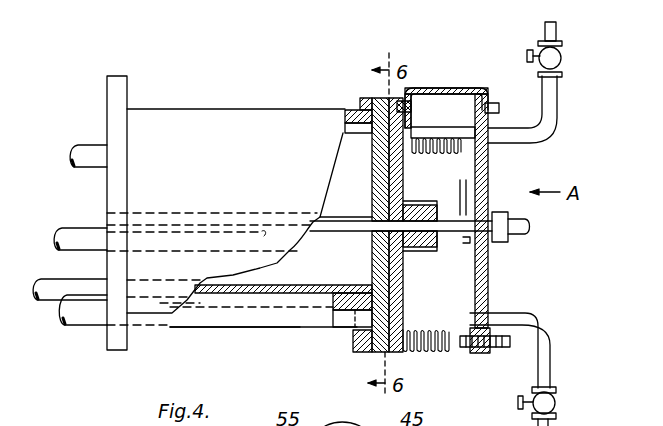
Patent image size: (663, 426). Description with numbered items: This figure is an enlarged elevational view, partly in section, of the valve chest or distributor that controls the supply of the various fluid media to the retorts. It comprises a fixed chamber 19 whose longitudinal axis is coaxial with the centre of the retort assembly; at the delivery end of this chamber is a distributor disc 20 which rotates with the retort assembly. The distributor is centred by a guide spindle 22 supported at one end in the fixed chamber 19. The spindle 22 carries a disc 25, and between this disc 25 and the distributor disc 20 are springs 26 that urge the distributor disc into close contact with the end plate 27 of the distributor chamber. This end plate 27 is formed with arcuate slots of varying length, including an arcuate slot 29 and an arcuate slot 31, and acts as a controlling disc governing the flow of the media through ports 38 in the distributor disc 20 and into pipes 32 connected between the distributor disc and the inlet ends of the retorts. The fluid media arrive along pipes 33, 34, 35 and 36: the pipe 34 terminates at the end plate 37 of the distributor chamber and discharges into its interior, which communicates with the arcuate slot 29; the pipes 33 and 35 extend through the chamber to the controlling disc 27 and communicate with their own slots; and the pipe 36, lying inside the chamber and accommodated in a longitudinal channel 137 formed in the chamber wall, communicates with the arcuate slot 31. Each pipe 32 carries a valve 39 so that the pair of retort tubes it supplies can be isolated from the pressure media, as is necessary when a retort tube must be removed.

The fixed chamber 19 is at (197, 114).
The distributor disc 20 is at (392, 168).
The guide spindle 22 is at (337, 225).
The disc 25 is at (478, 168).
The springs 26 is at (450, 154).
The end plate 27 is at (382, 98).
The arcuate slot 29 is at (372, 131).
The arcuate slot 31 is at (370, 348).
The pipes 32 is at (549, 98).
The pipe 33 is at (72, 233).
The pipe 34 is at (82, 151).
The pipe 35 is at (47, 284).
The pipe 36 is at (86, 322).
The end plate 37 is at (110, 88).
The ports 38 is at (405, 119).
The valve 39 is at (561, 58).
The longitudinal channel 137 is at (228, 331).